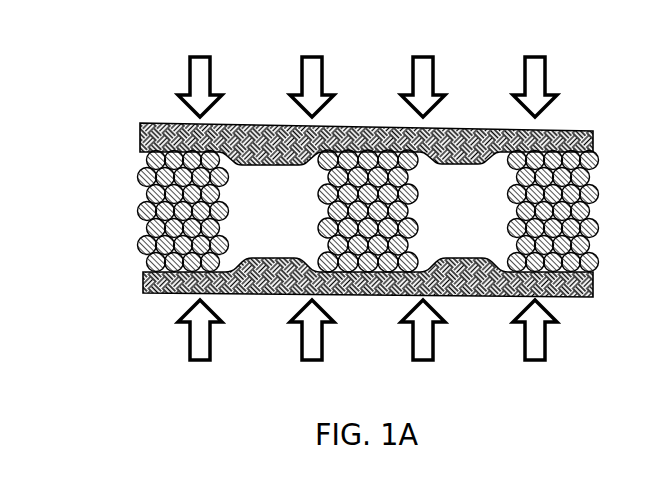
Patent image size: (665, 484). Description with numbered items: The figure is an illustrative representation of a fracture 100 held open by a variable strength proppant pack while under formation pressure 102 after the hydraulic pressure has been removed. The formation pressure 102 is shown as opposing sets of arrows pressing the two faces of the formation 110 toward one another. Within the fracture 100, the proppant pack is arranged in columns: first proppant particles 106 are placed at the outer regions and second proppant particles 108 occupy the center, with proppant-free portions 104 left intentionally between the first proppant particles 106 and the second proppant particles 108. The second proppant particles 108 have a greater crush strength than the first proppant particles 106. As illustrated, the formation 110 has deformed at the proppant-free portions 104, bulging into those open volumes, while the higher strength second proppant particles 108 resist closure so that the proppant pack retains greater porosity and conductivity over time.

The fracture 100 is at (128, 58).
The formation pressure 102 is at (210, 70).
The proppant-free portions 104 is at (263, 170).
The first proppant particles 106 is at (143, 270).
The second proppant particles 108 is at (415, 186).
The formation 110 is at (388, 131).